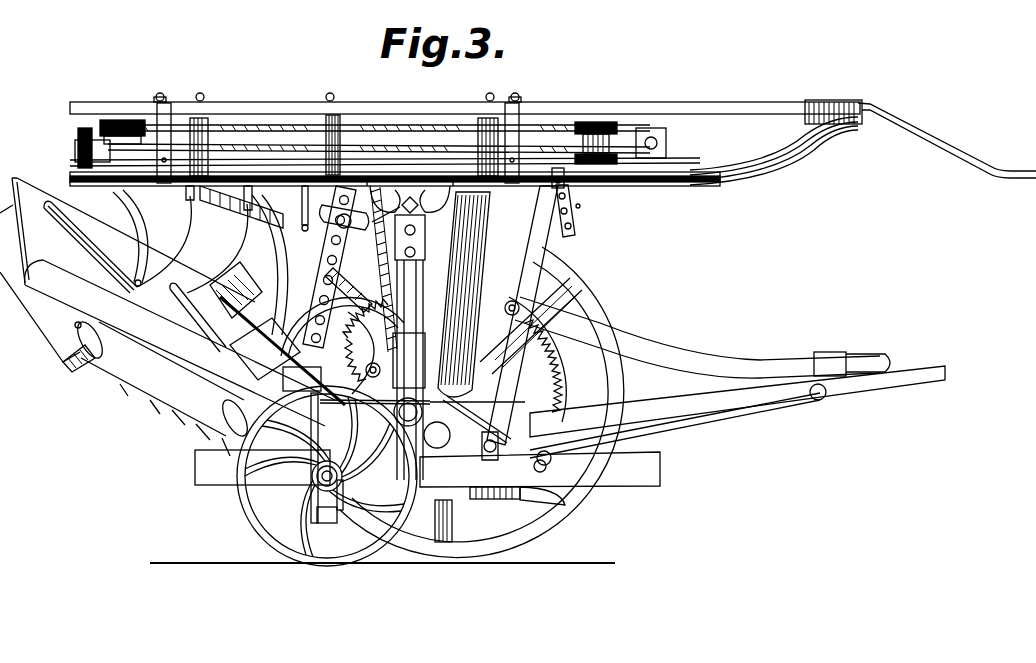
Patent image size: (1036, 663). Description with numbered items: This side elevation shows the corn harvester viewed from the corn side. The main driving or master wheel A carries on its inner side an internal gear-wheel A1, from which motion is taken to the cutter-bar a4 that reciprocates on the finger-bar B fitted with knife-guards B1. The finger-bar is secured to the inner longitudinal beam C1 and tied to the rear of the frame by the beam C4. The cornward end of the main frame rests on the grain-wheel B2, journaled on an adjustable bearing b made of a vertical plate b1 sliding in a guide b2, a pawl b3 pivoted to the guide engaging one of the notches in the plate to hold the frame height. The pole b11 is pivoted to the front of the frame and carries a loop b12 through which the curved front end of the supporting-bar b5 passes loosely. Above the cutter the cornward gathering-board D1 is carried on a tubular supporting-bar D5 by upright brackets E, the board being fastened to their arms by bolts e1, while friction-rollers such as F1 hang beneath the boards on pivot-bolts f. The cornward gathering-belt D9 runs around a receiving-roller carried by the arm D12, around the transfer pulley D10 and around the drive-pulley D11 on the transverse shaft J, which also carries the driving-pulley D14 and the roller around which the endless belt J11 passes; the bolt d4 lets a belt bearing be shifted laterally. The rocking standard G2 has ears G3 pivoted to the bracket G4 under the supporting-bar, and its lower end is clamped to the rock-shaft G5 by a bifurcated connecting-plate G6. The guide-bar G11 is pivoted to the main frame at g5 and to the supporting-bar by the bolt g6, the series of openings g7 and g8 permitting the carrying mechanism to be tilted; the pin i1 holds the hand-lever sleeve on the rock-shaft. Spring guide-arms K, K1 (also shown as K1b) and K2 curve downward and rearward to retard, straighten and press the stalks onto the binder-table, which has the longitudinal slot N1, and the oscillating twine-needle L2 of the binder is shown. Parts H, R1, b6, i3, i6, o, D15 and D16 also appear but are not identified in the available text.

The cornward gathering-board D1 is at (466, 105).
The bent draft bar D16 is at (972, 150).
The leaf spring D15 is at (700, 172).
The bolt d4 is at (667, 138).
The cornward gathering-belt D9 is at (450, 156).
The friction-roller F1 is at (379, 139).
The spring guide-arm K1 is at (320, 145).
The upright bracket E is at (165, 118).
The bolt e1 is at (341, 88).
The pivot-bolt f is at (345, 90).
The arm D12 is at (107, 130).
The tubular supporting-bar D5 is at (75, 170).
The driving-pulley D14 is at (610, 141).
The intermediate or transfer pulley D10 is at (411, 220).
The rocking standard G2 is at (420, 370).
The ears G3 is at (409, 421).
The rock-shaft G5 is at (461, 432).
The slotted link b6 is at (329, 267).
The bracket G4 is at (356, 207).
The bifurcated connecting-plate G6 is at (474, 294).
The guide-bar G11 is at (542, 315).
The openings g7 is at (558, 196).
The openings g8 is at (600, 201).
The bolt g6 is at (566, 170).
The main driving or master wheel A is at (600, 308).
The internal gear-wheel A1 is at (560, 382).
The supporting-bar b5 is at (697, 337).
The loop b12 is at (852, 354).
The pole b11 is at (888, 376).
The longitudinal beam C1 is at (540, 469).
The finger-bar B is at (495, 480).
The knife-guards B1 is at (535, 509).
The cutter-bar a4 is at (462, 521).
The pivot g5 is at (509, 451).
The endless belt J11 is at (430, 399).
The beam C4 is at (262, 467).
The grain-wheel B2 is at (258, 530).
The pawl b3 is at (310, 472).
The adjustable bearing b is at (343, 472).
The vertical plate b1 is at (327, 522).
The guide b2 is at (353, 499).
The drive-pulley D11 is at (342, 346).
The transverse shaft J is at (302, 379).
The longitudinal slot N1 is at (70, 243).
The oscillating twine-needle L2 is at (120, 238).
The board H is at (180, 343).
The spring guide-arm K is at (182, 247).
The spring guide-arm K1b is at (216, 269).
The spring guide-arm K2 is at (286, 260).
The roller R1 is at (282, 351).
The pin i1 is at (118, 372).
The pins i3 is at (175, 420).
The roller end i6 is at (80, 372).
The pin o is at (75, 325).